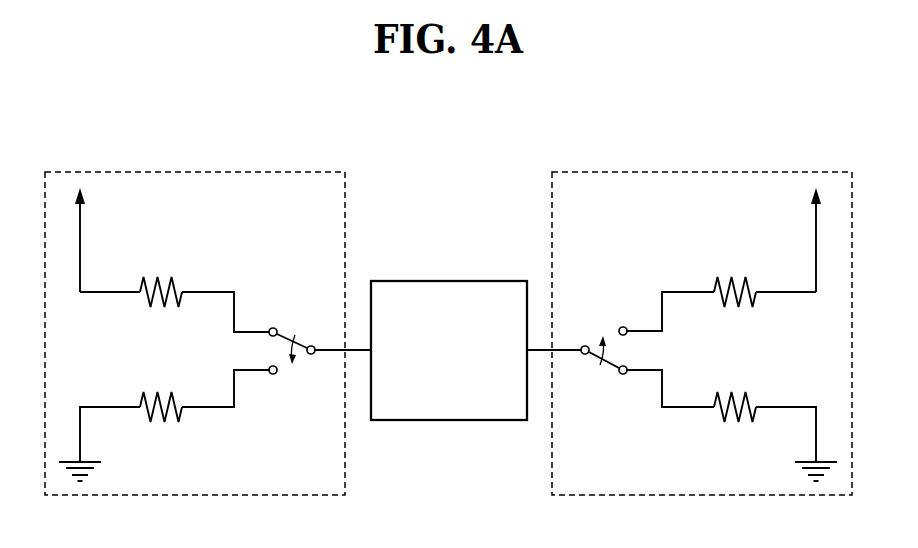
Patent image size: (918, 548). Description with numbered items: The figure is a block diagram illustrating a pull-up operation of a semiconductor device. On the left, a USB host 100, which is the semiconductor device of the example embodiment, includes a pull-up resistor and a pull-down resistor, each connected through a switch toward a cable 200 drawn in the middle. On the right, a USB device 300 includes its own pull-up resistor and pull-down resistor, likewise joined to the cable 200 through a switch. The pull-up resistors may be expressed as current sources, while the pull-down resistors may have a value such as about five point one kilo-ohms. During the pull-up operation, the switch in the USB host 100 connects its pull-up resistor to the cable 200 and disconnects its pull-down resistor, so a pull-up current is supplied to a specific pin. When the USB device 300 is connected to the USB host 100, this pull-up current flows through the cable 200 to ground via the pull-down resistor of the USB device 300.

The USB host 100 is at (195, 172).
The cable 200 is at (448, 281).
The USB device 300 is at (700, 172).